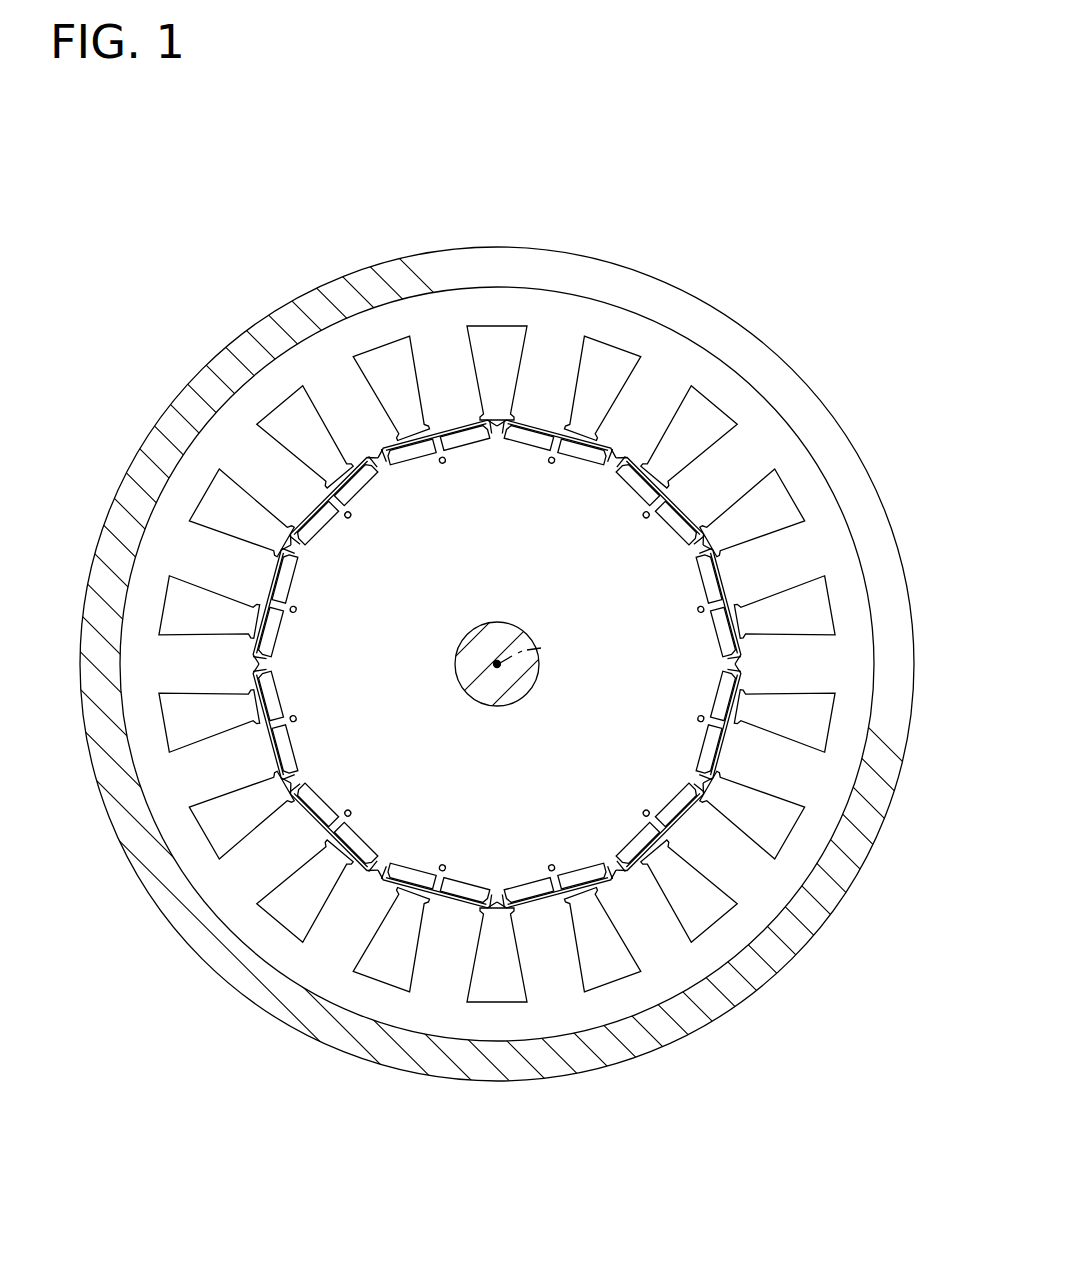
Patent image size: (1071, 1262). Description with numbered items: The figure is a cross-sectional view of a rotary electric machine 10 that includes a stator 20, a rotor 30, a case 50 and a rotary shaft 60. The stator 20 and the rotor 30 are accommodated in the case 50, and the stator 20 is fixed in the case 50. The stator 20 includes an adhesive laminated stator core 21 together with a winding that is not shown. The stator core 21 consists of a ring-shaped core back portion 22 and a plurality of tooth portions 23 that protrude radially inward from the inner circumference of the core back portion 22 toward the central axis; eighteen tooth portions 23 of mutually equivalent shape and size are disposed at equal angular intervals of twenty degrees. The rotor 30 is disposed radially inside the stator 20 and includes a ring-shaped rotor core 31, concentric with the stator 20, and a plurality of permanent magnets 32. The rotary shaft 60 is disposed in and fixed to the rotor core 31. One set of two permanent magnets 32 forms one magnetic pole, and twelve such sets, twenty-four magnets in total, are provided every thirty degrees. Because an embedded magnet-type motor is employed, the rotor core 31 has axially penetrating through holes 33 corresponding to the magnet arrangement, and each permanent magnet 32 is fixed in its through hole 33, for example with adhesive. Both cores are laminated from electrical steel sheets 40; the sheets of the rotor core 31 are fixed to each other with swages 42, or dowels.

The rotary electric machine 10 is at (798, 155).
The stator 20 is at (784, 407).
The stator core 21 is at (720, 206).
The core back portion 22 is at (697, 350).
The tooth portions 23 is at (633, 383).
The rotor 30 is at (442, 666).
The rotor core 31 is at (396, 852).
The permanent magnets 32 is at (580, 458).
The through holes 33 is at (600, 870).
The electrical steel sheets 40 is at (281, 372).
The swages 42 is at (349, 518).
The case 50 is at (832, 440).
The rotary shaft 60 is at (530, 682).